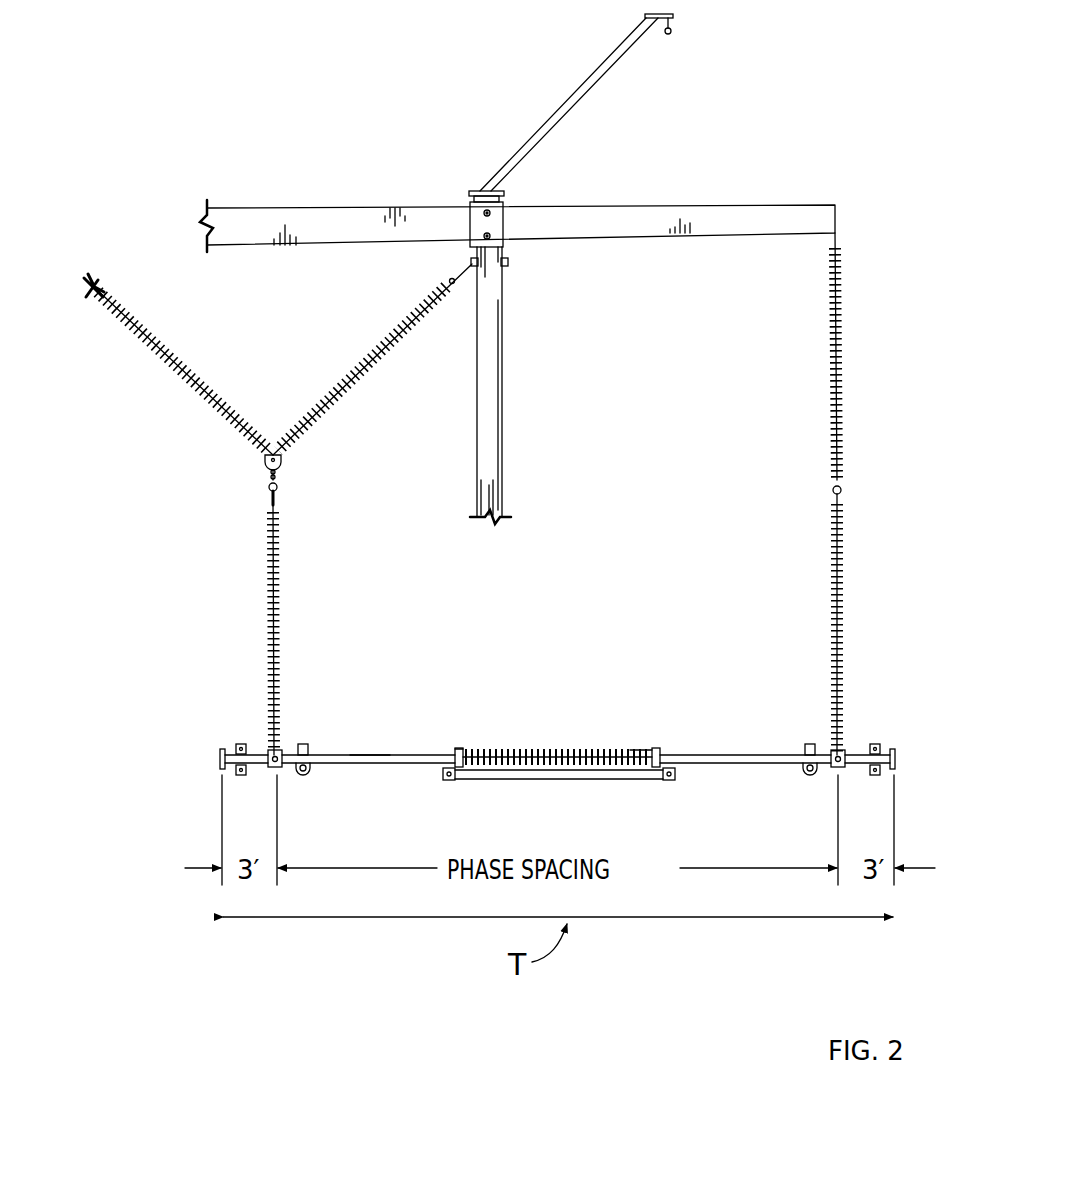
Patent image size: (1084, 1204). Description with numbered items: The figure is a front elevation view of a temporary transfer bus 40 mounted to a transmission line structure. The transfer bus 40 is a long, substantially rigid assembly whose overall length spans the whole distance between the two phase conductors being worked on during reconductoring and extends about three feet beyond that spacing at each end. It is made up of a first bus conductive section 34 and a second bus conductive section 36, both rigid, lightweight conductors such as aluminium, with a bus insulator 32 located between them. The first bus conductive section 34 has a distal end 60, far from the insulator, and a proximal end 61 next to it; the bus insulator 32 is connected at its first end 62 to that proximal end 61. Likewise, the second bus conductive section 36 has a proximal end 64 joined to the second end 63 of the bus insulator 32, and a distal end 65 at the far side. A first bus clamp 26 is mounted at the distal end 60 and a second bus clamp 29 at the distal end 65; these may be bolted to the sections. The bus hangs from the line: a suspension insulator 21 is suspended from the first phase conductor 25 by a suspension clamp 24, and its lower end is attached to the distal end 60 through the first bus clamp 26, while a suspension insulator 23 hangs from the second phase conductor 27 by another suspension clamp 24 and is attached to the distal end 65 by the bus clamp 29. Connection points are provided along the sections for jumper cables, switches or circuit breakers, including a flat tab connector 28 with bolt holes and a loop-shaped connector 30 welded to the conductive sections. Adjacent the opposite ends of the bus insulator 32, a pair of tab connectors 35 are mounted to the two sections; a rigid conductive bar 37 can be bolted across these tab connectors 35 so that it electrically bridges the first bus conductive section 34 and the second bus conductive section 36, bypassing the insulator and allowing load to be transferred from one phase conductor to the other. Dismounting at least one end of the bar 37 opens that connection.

The suspension insulator 21 is at (270, 578).
The suspension insulator 23 is at (840, 652).
The suspension clamp 24 is at (270, 500).
The first phase conductor 25 is at (268, 488).
The first bus clamp 26 is at (279, 750).
The second phase conductor 27 is at (840, 488).
The tab connector 28 is at (303, 745).
The second bus clamp 29 is at (843, 751).
The loop-shaped connector 30 is at (302, 772).
The bus insulator 32 is at (522, 751).
The first bus conductive section 34 is at (398, 754).
The tab connectors 35 is at (445, 781).
The second bus conductive section 36 is at (727, 754).
The rigid conductive bar 37 is at (588, 780).
The transfer bus 40 is at (193, 766).
The distal end 60 is at (264, 780).
The proximal end 61 is at (368, 750).
The first end 62 is at (466, 750).
The second end 63 is at (633, 750).
The proximal end 64 is at (668, 750).
The distal end 65 is at (830, 774).